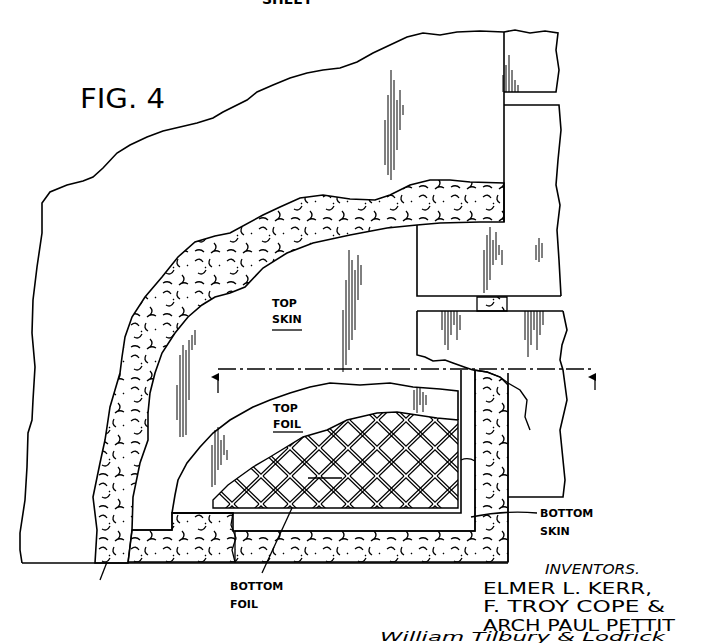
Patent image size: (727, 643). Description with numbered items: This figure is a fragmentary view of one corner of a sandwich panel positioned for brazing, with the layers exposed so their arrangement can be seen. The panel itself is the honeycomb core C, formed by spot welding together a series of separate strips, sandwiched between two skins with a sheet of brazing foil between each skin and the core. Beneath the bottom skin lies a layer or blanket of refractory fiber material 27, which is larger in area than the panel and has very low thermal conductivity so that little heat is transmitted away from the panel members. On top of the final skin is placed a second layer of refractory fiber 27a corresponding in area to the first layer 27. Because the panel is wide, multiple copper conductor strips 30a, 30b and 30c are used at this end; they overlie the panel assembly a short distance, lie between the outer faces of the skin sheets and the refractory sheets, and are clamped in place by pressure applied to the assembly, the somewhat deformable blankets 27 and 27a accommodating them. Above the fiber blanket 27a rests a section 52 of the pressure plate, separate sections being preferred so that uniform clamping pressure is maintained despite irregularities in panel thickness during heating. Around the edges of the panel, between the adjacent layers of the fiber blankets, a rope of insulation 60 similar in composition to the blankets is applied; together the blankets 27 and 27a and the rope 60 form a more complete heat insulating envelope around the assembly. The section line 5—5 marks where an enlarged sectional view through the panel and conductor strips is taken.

The pressure plate section 52 is at (270, 157).
The second layer of refractory fiber 27a is at (300, 238).
The frame member 30c is at (550, 48).
The conductor strip 30b is at (553, 162).
The conductor strip 30a is at (562, 343).
The rope of insulation 60 is at (503, 414).
The refractory fiber blanket 27 is at (345, 552).
The honeycomb core C is at (271, 462).
The section line 5— 5 is at (410, 380).